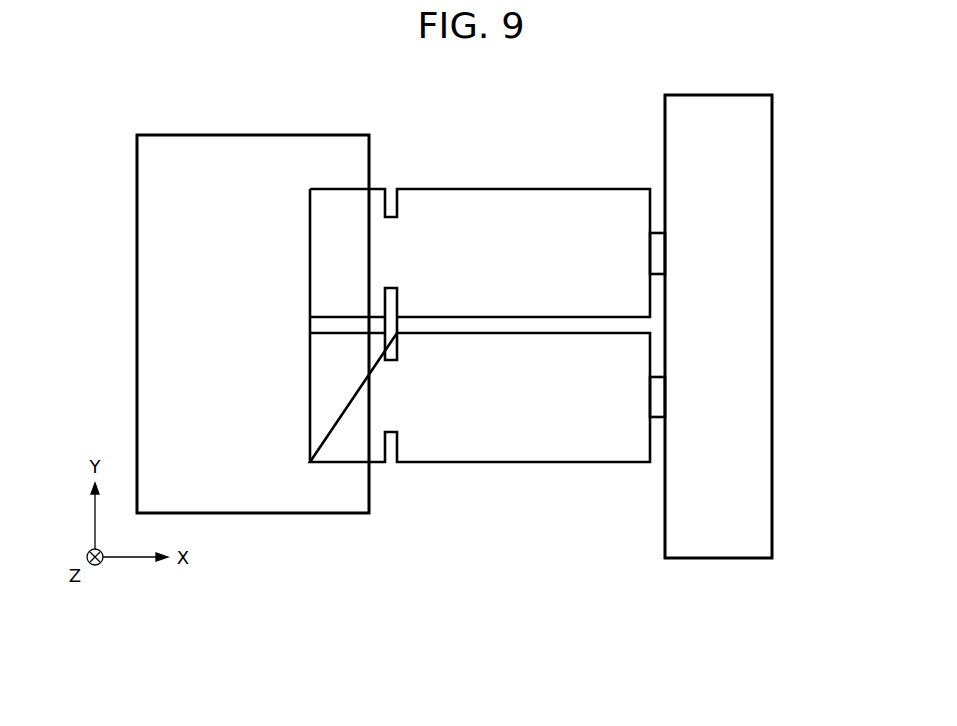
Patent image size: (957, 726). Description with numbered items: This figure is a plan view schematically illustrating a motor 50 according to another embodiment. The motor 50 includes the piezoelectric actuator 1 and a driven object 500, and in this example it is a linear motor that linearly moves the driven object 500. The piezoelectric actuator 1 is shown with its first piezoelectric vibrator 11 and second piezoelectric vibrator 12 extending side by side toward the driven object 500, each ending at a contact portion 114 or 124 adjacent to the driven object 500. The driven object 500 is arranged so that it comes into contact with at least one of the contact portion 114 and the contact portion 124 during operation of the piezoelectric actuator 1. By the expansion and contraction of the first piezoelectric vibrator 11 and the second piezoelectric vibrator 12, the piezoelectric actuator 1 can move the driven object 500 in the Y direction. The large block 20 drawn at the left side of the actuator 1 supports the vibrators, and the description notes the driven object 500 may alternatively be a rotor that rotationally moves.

The piezoelectric actuator 1 is at (126, 122).
The holder 20 is at (273, 143).
The first piezoelectric vibrator 11 is at (511, 197).
The second piezoelectric vibrator 12 is at (512, 458).
The contact portion 114 is at (655, 255).
The contact portion 124 is at (655, 400).
The driven object 500 is at (772, 134).
The motor 50 is at (830, 62).